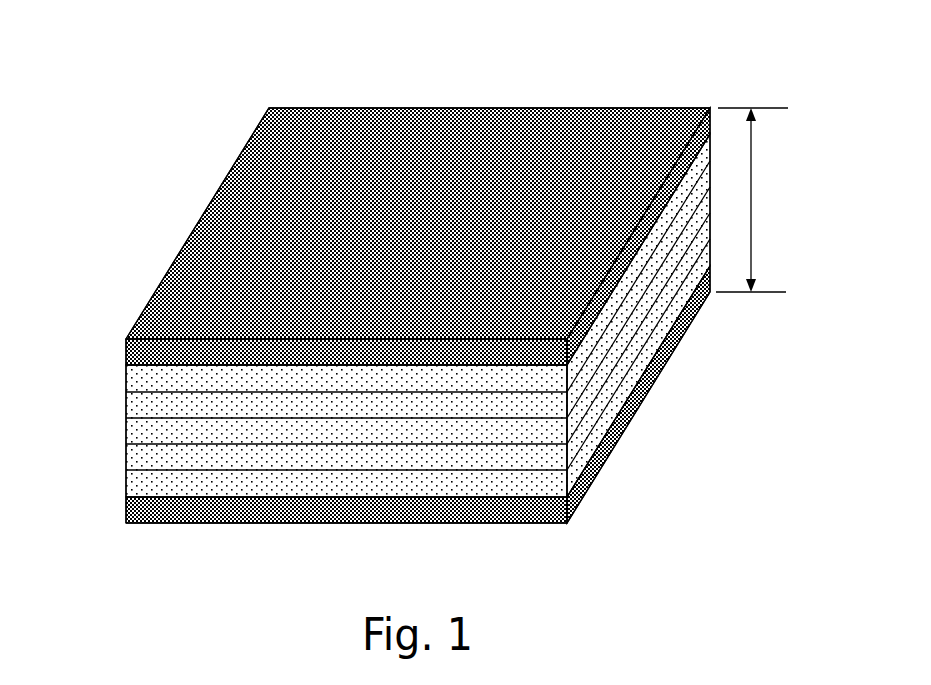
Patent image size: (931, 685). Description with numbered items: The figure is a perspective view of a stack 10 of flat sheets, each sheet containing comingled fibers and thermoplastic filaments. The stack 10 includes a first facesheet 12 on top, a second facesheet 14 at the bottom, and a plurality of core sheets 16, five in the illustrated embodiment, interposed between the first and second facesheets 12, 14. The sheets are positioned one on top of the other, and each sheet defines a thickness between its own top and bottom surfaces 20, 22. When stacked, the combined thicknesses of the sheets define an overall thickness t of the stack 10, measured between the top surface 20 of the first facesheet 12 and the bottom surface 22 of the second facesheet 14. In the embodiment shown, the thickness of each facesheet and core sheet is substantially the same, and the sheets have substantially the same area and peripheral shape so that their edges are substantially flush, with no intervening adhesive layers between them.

The stack 10 is at (408, 298).
The first facesheet 12 is at (554, 100).
The second facesheet 14 is at (503, 532).
The core sheets 16 is at (113, 405).
The top surface 20 is at (450, 138).
The bottom surface 22 is at (405, 523).
The overall thickness t is at (751, 184).